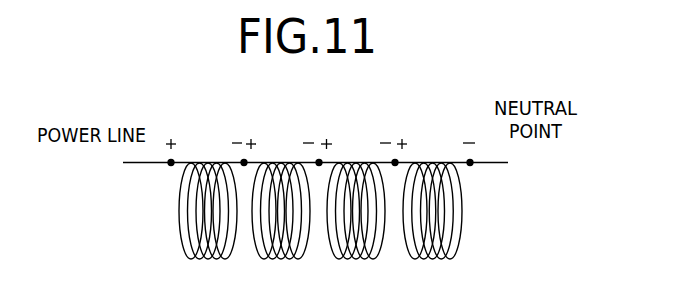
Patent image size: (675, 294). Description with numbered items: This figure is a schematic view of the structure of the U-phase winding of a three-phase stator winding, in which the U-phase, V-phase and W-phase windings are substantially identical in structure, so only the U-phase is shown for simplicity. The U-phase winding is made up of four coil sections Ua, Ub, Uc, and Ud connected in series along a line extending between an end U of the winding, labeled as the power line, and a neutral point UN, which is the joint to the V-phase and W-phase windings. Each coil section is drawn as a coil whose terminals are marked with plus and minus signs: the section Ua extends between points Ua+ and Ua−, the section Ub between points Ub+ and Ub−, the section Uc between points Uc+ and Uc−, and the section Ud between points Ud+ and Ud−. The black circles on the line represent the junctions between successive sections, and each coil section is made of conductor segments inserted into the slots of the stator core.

The end of the U-phase winding U is at (134, 162).
The coil section Ua is at (205, 188).
The coil section Ub is at (280, 188).
The coil section Uc is at (355, 188).
The coil section Ud is at (433, 188).
The neutral point UN is at (508, 164).